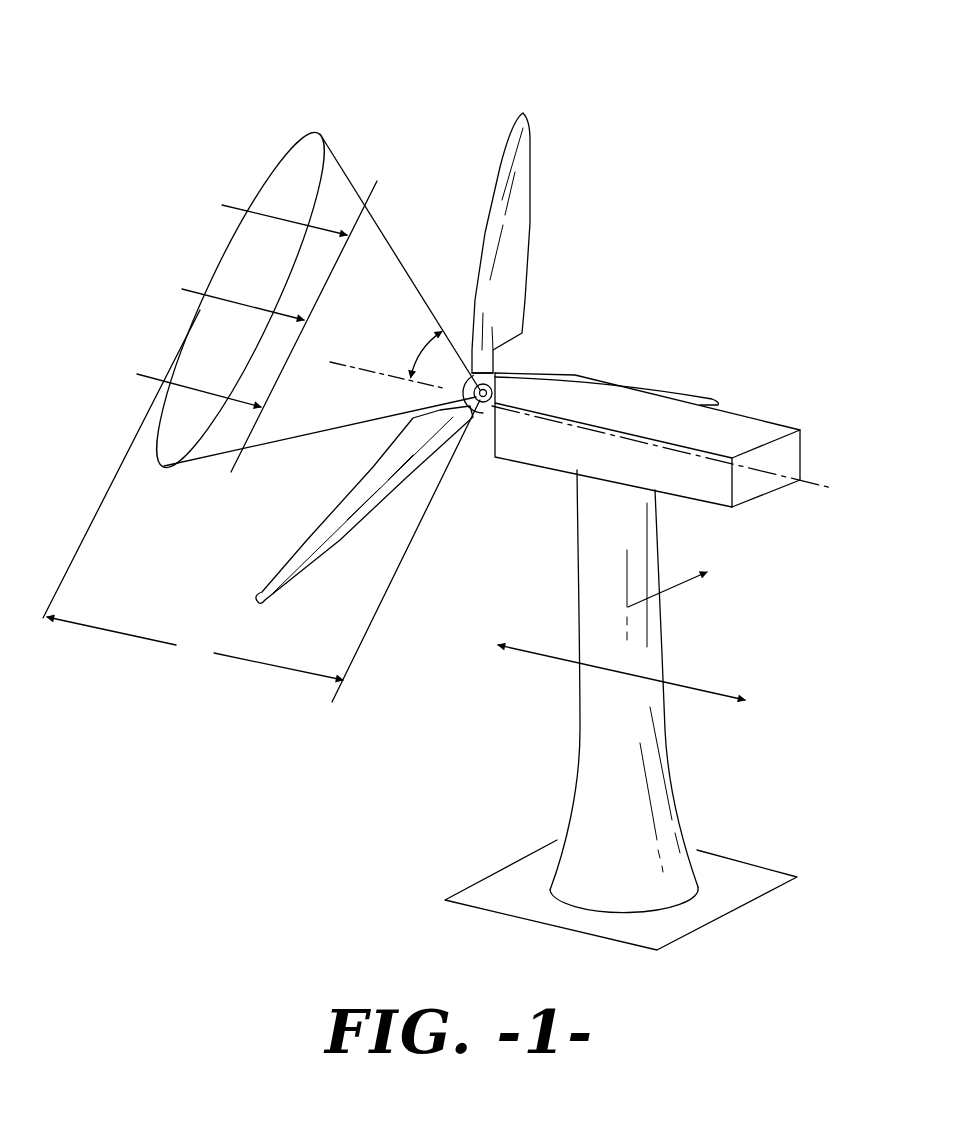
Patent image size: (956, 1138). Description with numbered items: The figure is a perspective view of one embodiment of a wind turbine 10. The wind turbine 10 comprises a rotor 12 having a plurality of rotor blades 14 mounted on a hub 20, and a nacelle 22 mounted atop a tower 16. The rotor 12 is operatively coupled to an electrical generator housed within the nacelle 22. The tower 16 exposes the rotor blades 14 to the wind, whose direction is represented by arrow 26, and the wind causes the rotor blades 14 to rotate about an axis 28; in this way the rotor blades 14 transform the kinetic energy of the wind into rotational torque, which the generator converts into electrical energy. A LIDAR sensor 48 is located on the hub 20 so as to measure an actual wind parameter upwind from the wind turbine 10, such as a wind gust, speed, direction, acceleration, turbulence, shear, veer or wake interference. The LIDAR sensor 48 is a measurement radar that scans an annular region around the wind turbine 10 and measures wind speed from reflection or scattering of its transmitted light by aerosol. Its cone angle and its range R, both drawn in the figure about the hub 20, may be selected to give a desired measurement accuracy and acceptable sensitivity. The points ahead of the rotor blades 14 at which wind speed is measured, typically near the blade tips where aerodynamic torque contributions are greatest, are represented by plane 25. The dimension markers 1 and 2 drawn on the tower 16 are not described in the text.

The wind turbine 10 is at (511, 479).
The rotor 12 is at (552, 364).
The rotor blades 14 is at (528, 222).
The tower 16 is at (677, 802).
The hub 20 is at (487, 422).
The nacelle 22 is at (806, 450).
The plane 25 is at (373, 192).
The arrow 26 is at (193, 290).
The axis 28 is at (364, 368).
The LIDAR sensor 48 is at (497, 375).
The range R is at (261, 506).
The tower diameter 1 is at (687, 684).
The tower surface normal 2 is at (673, 590).